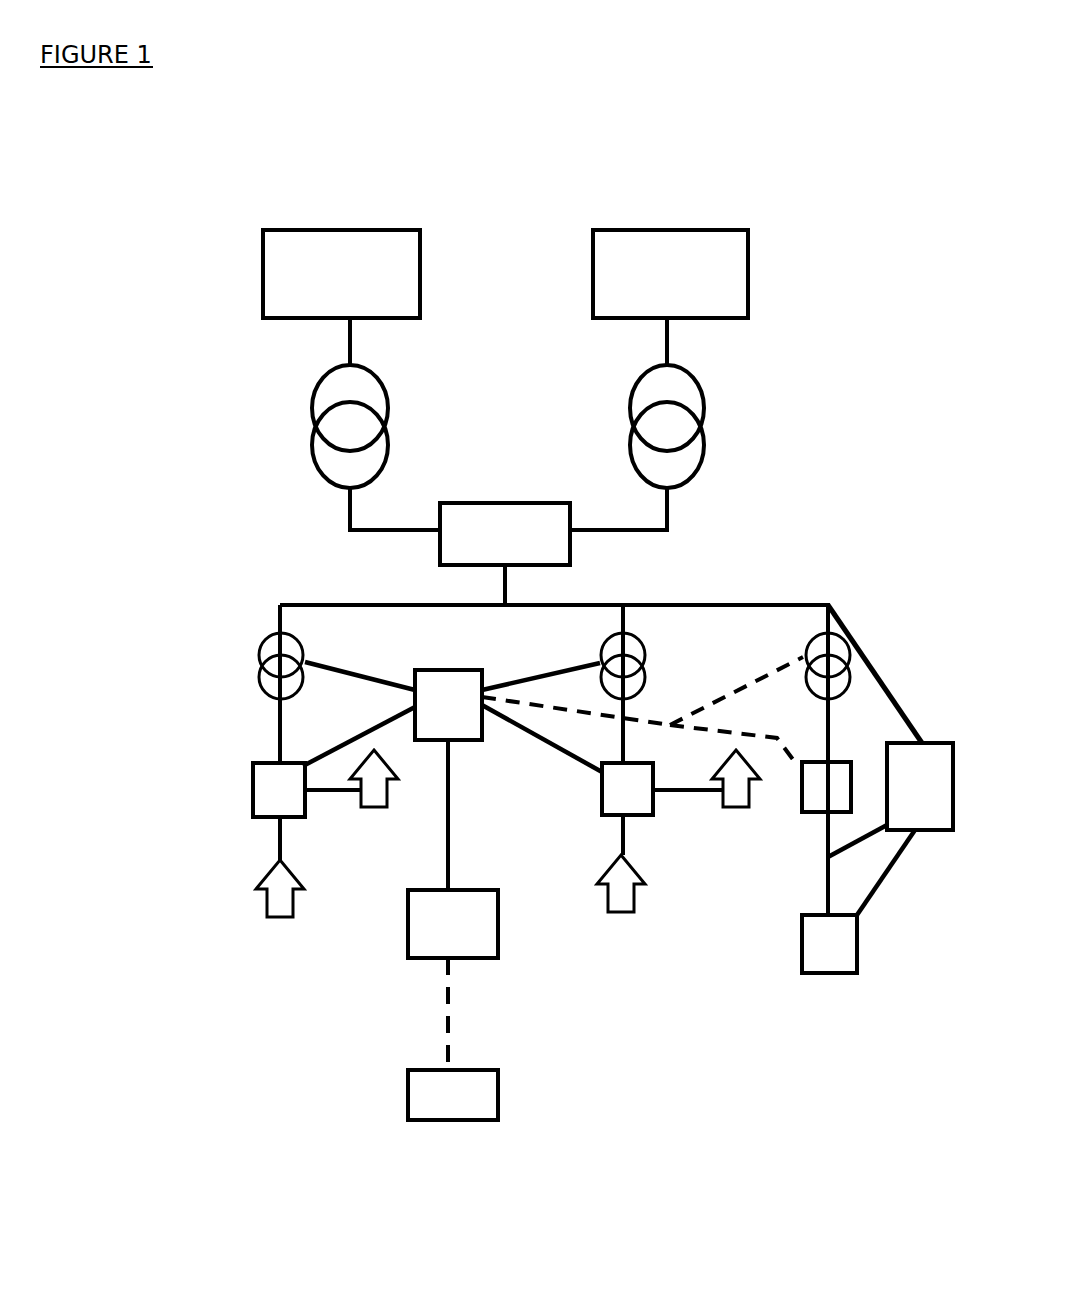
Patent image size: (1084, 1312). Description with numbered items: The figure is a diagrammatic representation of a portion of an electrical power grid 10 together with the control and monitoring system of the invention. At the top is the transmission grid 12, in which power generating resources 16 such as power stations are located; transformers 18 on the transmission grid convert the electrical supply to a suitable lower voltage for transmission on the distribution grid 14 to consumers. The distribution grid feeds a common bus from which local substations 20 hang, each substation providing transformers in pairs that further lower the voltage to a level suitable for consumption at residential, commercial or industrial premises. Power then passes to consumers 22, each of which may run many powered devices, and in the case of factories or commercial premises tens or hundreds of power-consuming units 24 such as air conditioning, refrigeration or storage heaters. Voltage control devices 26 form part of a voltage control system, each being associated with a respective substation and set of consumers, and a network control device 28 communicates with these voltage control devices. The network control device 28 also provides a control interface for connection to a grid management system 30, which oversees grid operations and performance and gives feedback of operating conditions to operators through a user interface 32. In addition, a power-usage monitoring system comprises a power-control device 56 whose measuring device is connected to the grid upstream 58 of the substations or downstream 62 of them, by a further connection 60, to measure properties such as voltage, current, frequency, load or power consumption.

The electrical power grid 10 is at (217, 503).
The transmission grid 12 is at (562, 190).
The distribution grid 14 is at (687, 847).
The power generating resources 16 is at (278, 274).
The transformers 18 is at (309, 400).
The substations 20 is at (265, 655).
The consumers 22 is at (265, 917).
The power-consuming units 24 is at (835, 975).
The voltage control devices 26 is at (252, 790).
The network control device 28 is at (437, 668).
The grid management system 30 is at (408, 957).
The user interface 32 is at (408, 1085).
The power-control device 56 is at (920, 786).
The upstream connection 58 is at (875, 674).
The connection line 60 is at (890, 880).
The downstream connection 62 is at (857, 850).